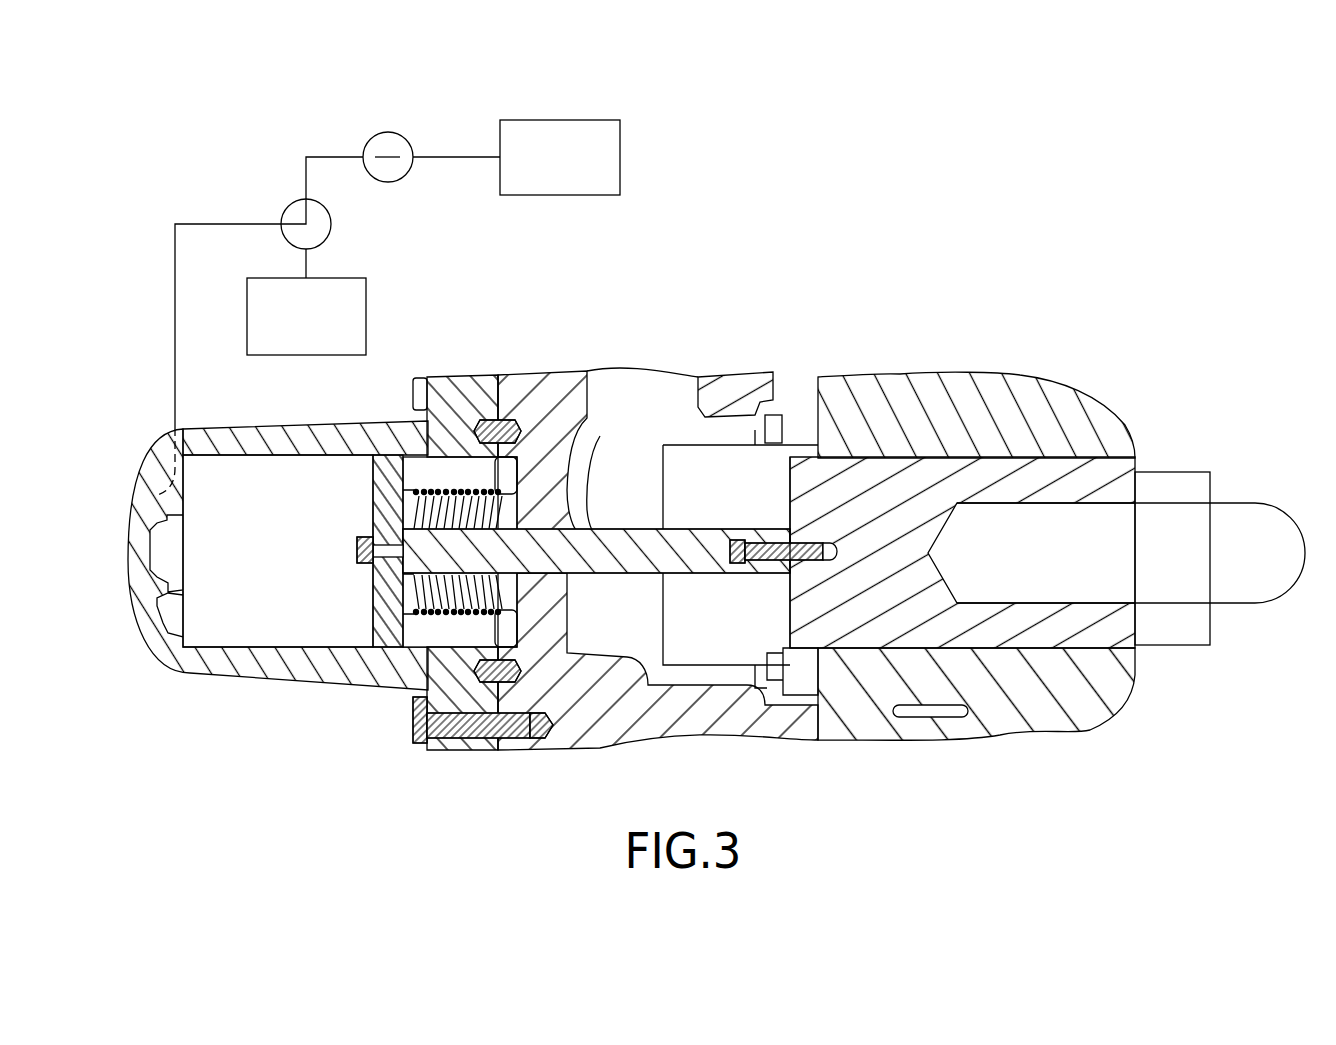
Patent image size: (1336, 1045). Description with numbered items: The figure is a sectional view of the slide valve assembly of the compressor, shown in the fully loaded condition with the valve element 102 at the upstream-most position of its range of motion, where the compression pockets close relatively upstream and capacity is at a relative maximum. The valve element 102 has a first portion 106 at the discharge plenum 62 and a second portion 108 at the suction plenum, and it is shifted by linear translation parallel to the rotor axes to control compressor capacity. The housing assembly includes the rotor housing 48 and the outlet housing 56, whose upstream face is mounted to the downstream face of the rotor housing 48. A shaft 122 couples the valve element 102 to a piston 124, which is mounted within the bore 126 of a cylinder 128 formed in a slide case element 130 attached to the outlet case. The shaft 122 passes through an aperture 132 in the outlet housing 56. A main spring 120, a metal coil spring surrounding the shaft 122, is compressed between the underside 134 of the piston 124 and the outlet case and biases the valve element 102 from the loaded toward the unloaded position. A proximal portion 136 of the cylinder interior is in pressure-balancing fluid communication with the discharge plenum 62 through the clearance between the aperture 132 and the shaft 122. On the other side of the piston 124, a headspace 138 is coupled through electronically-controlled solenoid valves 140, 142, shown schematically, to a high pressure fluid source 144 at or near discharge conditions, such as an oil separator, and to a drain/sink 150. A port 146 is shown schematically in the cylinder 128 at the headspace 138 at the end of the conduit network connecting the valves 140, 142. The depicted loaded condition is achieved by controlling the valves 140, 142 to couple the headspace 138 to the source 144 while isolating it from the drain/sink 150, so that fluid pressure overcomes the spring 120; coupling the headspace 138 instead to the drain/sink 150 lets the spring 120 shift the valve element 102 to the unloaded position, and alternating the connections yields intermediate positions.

The rotor housing 48 is at (1090, 716).
The outlet/discharge housing 56 is at (543, 367).
The discharge plenum 62 is at (601, 619).
The valve element 102 is at (858, 622).
The first portion 106 is at (775, 490).
The second portion 108 is at (1220, 474).
The main spring 120 is at (454, 690).
The shaft 122 is at (641, 540).
The piston 124 is at (387, 500).
The bore 126 is at (266, 617).
The cylinder 128 is at (275, 667).
The slide case element 130 is at (343, 745).
The aperture 132 is at (585, 525).
The underside of the piston 134 is at (403, 478).
The proximal portion of the cylinder interior 136 is at (425, 630).
The headspace 138 is at (340, 627).
The solenoid valve 140 is at (330, 233).
The solenoid valve 142 is at (405, 178).
The high pressure fluid source 144 is at (580, 172).
The port 146 is at (158, 493).
The drain/sink 150 is at (326, 333).